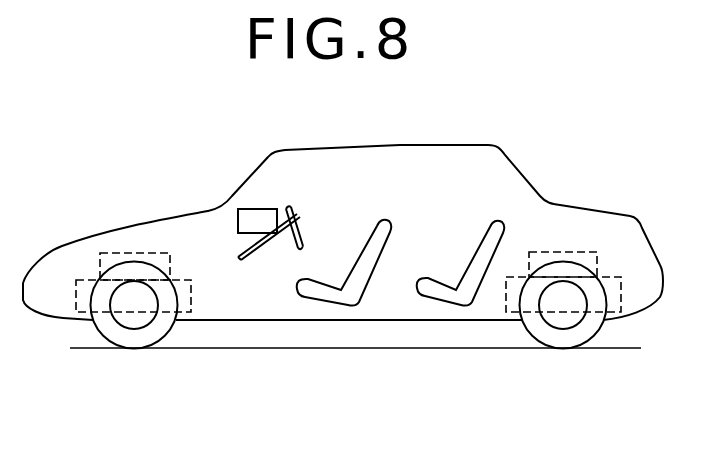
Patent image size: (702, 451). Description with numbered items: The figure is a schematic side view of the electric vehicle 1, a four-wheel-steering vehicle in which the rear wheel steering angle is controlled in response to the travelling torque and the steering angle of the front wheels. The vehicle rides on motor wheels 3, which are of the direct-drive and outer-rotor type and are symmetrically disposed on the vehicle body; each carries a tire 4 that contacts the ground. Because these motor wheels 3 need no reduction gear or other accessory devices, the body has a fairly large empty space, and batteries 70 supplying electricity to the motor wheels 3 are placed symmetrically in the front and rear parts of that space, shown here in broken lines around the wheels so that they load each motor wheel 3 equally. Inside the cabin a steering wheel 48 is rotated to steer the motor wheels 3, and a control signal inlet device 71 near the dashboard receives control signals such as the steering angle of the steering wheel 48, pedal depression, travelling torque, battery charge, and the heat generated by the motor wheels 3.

The electric vehicle 1 is at (147, 147).
The motor wheel 3 is at (127, 355).
The tire 4 is at (113, 337).
The steering wheel 48 is at (305, 223).
The batteries 70 is at (193, 296).
The control signal inlet device 71 is at (259, 208).